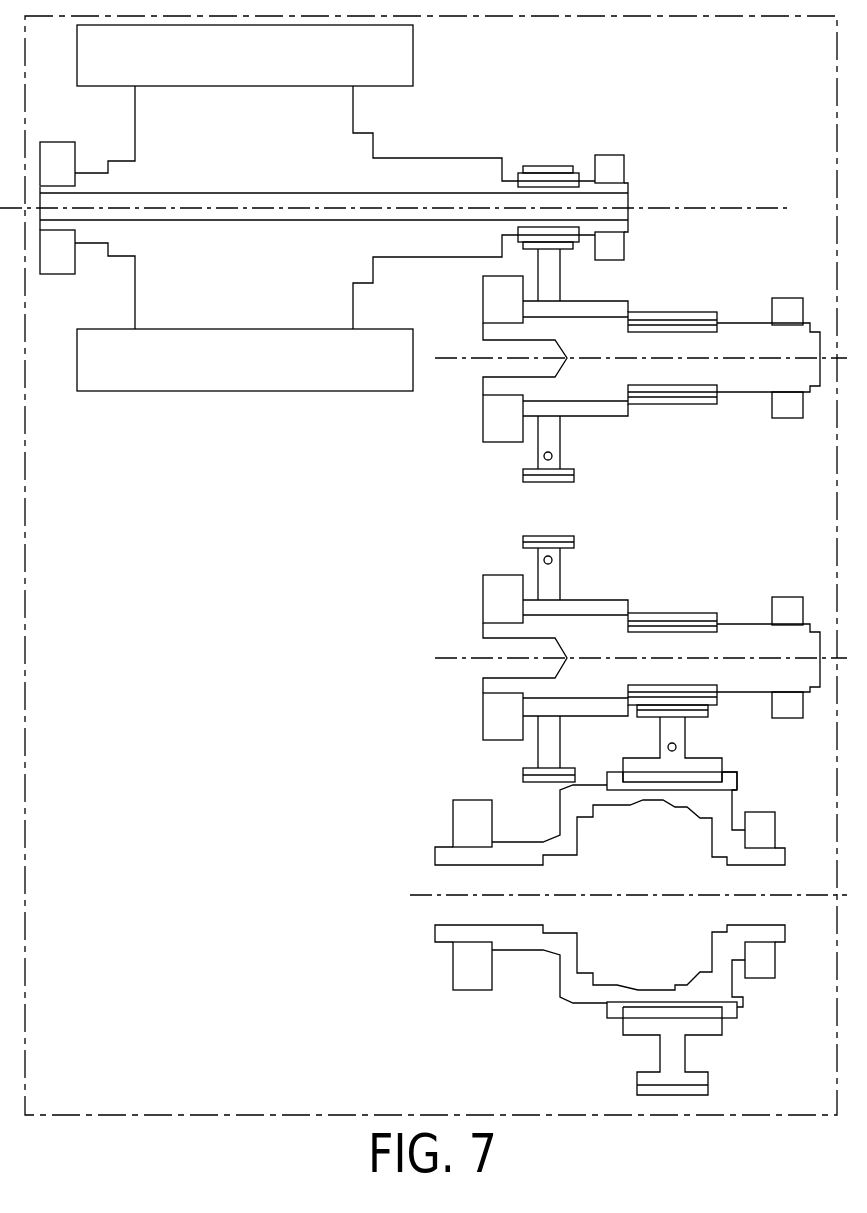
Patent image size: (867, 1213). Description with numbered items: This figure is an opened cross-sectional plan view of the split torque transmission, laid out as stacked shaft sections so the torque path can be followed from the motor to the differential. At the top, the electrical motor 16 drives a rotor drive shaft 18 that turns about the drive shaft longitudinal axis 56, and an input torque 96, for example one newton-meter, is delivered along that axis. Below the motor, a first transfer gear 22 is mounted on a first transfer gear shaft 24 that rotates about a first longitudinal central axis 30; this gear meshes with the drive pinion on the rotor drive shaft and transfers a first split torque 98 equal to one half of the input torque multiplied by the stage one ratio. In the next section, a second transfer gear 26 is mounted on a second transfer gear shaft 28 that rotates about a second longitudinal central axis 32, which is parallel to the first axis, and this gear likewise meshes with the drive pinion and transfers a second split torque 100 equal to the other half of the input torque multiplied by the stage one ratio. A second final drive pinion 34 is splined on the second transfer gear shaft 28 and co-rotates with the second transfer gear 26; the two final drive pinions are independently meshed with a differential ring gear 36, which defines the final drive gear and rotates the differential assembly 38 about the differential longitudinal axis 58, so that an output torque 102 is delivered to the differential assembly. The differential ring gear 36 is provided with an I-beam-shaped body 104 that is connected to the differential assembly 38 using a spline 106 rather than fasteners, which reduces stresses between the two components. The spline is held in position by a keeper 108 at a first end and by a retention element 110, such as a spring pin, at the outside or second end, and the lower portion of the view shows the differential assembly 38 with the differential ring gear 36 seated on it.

The electrical motor 16 is at (338, 105).
The rotor drive shaft 18 is at (483, 167).
The input torque 96 is at (550, 193).
The drive shaft longitudinal axis 56 is at (703, 206).
The first longitudinal central axis 30 is at (460, 362).
The first transfer gear shaft 24 is at (748, 377).
The second longitudinal central axis 32 is at (677, 290).
The first transfer gear 22 is at (572, 472).
The first split torque 98 is at (543, 457).
The second split torque 100 is at (543, 560).
The second transfer gear 26 is at (570, 545).
The second transfer gear shaft 28 is at (737, 630).
The second final drive pinion 34 is at (662, 617).
The differential ring gear 36 is at (710, 700).
The output torque 102 is at (668, 745).
The I-beam-shaped body 104 is at (710, 765).
The spline 106 is at (663, 790).
The keeper 108 is at (613, 780).
The retention element 110 is at (732, 777).
The differential longitudinal axis 58 is at (428, 893).
The differential assembly 38 is at (580, 995).